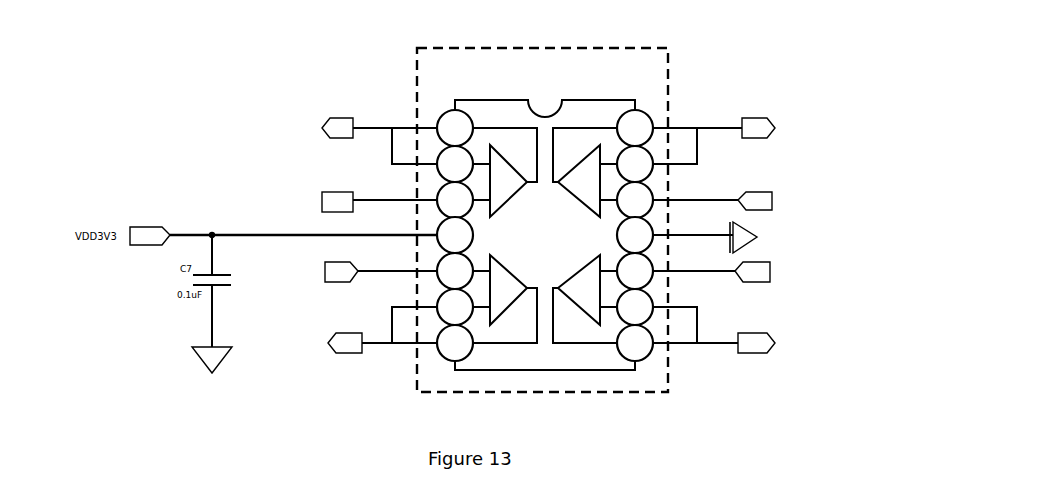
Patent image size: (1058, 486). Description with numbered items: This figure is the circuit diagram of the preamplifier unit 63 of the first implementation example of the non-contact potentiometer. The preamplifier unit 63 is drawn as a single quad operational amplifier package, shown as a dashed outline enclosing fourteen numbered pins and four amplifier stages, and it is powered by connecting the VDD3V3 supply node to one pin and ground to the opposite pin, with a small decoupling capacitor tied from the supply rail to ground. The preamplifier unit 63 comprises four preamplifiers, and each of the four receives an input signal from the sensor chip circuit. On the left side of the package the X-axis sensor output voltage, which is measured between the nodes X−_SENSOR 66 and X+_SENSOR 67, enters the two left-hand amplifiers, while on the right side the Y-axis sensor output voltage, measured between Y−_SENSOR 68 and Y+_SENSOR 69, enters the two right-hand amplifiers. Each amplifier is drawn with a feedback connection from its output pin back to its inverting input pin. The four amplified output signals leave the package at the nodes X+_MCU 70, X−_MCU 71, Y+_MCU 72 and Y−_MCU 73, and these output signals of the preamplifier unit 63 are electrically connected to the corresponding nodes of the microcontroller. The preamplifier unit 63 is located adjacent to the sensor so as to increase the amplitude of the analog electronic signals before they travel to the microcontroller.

The preamplifier unit 63 is at (670, 93).
The X−_SENSOR 66 is at (272, 282).
The X+_SENSOR 67 is at (240, 202).
The Y−_SENSOR 68 is at (850, 272).
The Y+_SENSOR 69 is at (852, 202).
The X+_MCU 70 is at (337, 117).
The X−_MCU 71 is at (350, 353).
The Y+_MCU 72 is at (745, 118).
The Y−_MCU 73 is at (743, 353).